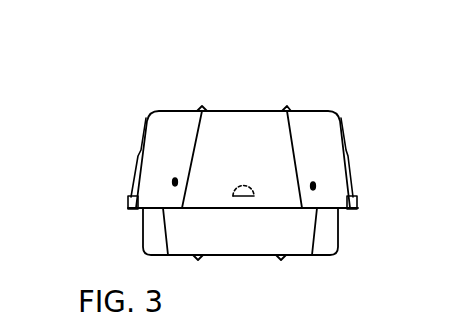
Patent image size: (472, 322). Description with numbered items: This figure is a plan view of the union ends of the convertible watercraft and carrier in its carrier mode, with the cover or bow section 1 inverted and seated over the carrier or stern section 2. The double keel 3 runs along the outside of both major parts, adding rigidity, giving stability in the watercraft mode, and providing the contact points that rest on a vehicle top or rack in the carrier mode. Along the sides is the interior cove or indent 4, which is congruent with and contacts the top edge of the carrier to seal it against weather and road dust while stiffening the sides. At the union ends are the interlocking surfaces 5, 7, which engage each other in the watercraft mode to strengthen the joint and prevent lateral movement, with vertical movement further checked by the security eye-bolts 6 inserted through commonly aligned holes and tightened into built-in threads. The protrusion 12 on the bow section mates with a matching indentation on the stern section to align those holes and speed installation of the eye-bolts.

The cover or bow section 1 is at (242, 165).
The carrier or stern section 2 is at (244, 248).
The double keel 3 is at (283, 108).
The interior cove or indent 4 is at (138, 153).
The interlocking surface 5 is at (243, 159).
The security eye-bolt 6 is at (173, 182).
The interlocking surface 7 is at (240, 231).
The protrusion 12 is at (250, 187).